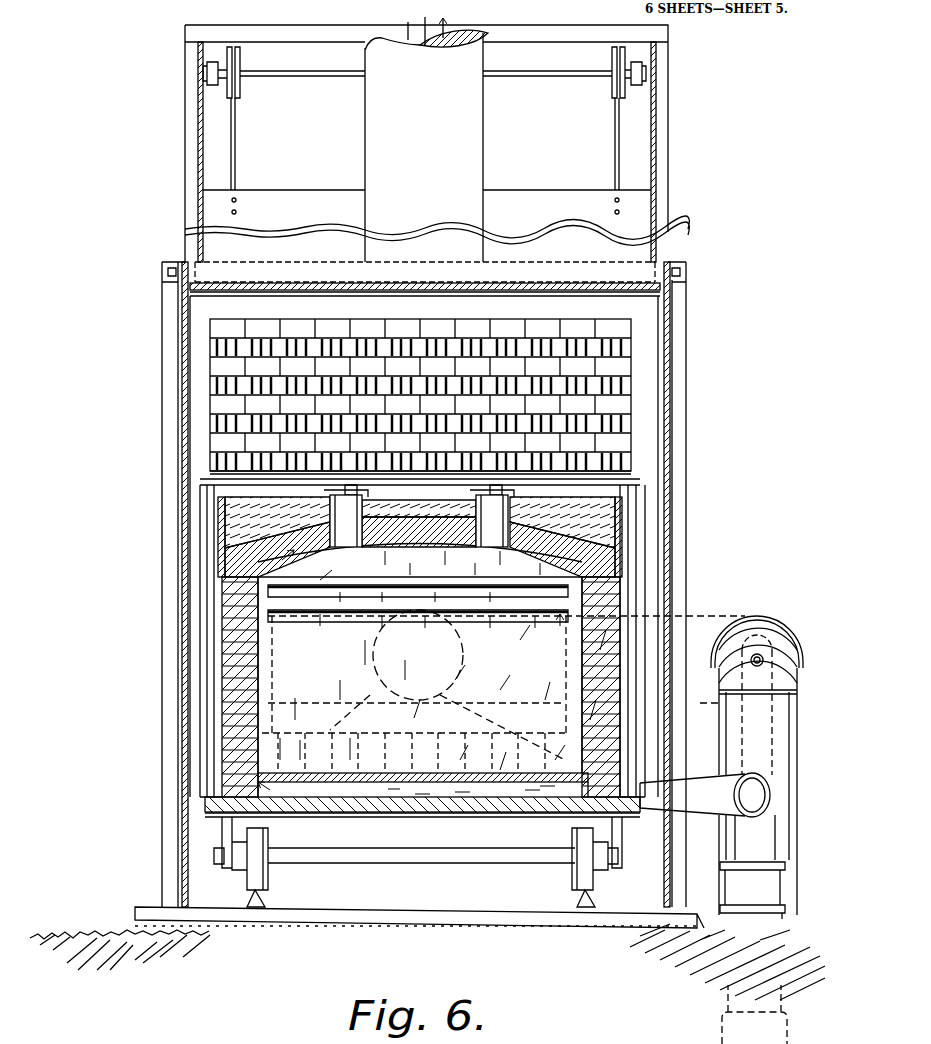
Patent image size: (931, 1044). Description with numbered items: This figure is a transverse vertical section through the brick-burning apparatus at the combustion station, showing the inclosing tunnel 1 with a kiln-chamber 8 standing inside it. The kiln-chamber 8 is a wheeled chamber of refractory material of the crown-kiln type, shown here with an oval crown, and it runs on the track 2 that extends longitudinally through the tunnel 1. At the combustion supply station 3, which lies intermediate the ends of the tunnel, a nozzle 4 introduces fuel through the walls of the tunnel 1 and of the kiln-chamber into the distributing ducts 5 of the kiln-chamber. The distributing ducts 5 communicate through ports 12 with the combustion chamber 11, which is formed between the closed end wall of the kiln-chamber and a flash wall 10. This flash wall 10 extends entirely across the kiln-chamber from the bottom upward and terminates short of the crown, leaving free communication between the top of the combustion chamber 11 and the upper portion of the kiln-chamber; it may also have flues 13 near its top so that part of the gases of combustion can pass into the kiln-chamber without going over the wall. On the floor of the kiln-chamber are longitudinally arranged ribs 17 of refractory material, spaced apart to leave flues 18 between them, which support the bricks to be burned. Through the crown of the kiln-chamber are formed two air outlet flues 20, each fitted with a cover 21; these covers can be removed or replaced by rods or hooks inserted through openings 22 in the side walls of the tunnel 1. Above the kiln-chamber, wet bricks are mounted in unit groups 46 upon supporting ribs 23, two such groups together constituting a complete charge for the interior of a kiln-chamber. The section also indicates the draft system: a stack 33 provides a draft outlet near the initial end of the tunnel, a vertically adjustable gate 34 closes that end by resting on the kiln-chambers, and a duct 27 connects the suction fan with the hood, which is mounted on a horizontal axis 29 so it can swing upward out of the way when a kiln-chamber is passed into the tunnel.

The inclosing tunnel 1 is at (172, 378).
The track 2 is at (265, 906).
The combustion supply station 3 is at (754, 1014).
The nozzle 4 is at (712, 806).
The distributing duct 5 is at (395, 800).
The kiln-chamber 8 is at (423, 812).
The flash wall 10 is at (578, 643).
The combustion chamber 11 is at (446, 685).
The port 12 is at (365, 790).
The flue 13 is at (322, 592).
The rib 17 is at (420, 752).
The flue 18 is at (440, 800).
The air outlet flue 20 is at (420, 533).
The cover 21 is at (357, 494).
The opening 22 is at (185, 468).
The supporting rib 23 is at (612, 486).
The duct 27 is at (788, 772).
The horizontal axis 29 is at (760, 655).
The stack 33 is at (376, 131).
The gate 34 is at (513, 199).
The unit group 46 is at (222, 366).